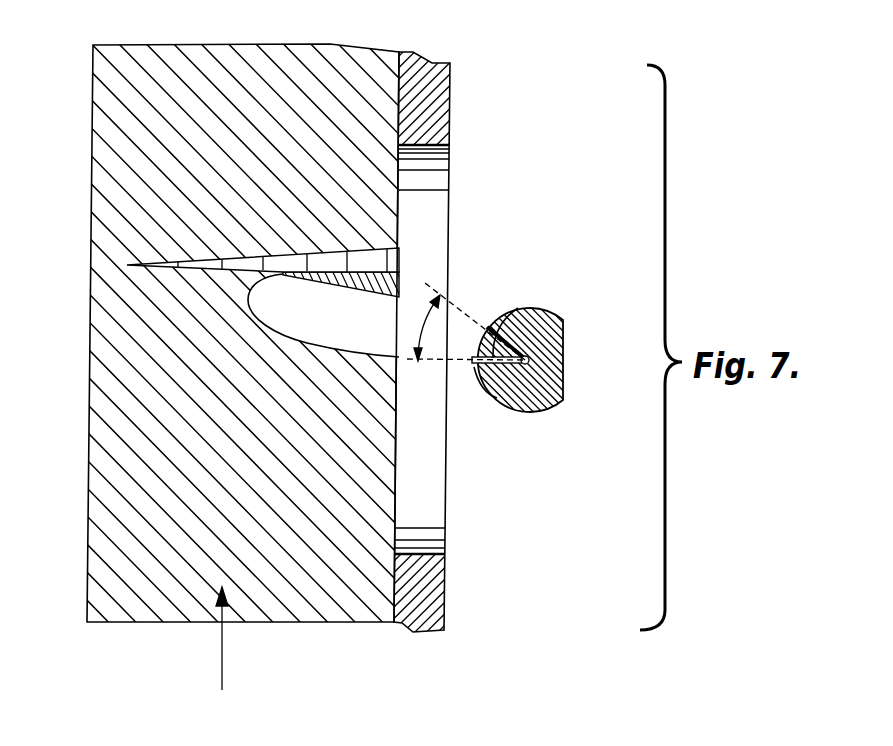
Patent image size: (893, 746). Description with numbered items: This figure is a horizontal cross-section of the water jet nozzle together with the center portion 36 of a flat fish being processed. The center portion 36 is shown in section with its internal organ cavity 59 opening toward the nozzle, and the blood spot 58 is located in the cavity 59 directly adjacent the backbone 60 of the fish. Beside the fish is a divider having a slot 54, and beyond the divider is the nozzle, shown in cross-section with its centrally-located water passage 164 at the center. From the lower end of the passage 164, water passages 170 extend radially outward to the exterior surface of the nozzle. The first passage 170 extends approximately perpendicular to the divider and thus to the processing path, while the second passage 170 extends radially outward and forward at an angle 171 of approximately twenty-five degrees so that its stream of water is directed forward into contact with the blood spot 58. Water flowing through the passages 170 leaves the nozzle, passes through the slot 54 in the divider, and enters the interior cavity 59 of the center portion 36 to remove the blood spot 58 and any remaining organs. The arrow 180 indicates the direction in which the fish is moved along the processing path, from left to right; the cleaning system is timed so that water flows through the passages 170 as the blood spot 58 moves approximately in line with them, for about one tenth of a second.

The center portion 36 is at (183, 67).
The slot 54 is at (445, 497).
The blood spot 58 is at (400, 284).
The internal organ cavity 59 is at (267, 301).
The backbone 60 is at (375, 261).
The water passage 164 is at (529, 360).
The water passages 170 is at (472, 443).
The angle 171 is at (443, 322).
The arrow 180 is at (222, 640).